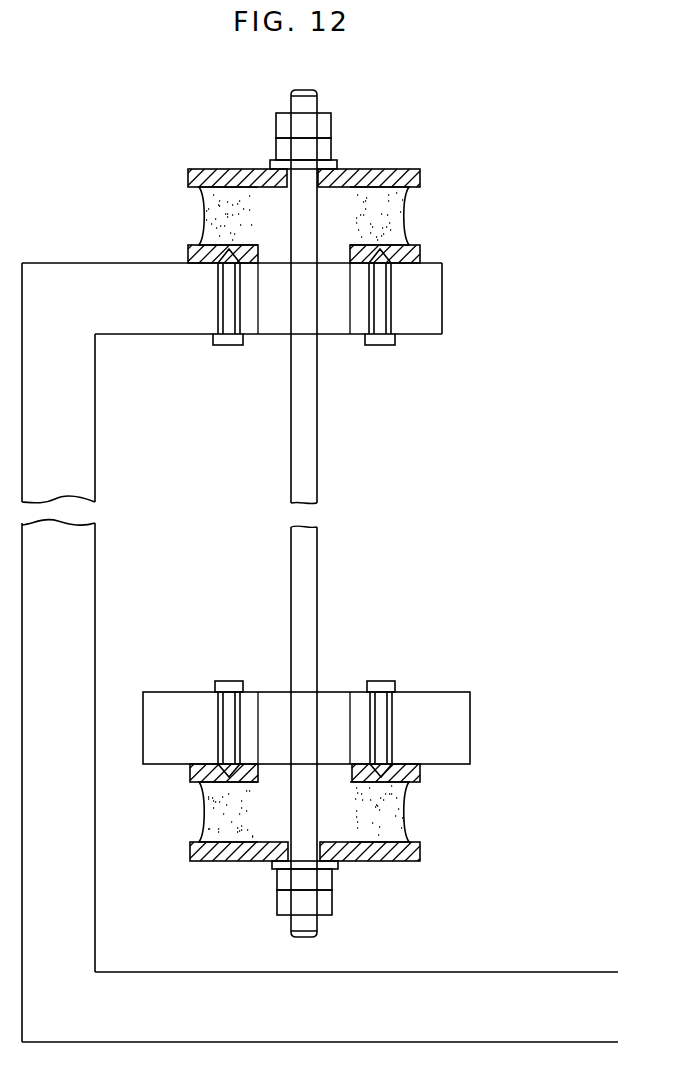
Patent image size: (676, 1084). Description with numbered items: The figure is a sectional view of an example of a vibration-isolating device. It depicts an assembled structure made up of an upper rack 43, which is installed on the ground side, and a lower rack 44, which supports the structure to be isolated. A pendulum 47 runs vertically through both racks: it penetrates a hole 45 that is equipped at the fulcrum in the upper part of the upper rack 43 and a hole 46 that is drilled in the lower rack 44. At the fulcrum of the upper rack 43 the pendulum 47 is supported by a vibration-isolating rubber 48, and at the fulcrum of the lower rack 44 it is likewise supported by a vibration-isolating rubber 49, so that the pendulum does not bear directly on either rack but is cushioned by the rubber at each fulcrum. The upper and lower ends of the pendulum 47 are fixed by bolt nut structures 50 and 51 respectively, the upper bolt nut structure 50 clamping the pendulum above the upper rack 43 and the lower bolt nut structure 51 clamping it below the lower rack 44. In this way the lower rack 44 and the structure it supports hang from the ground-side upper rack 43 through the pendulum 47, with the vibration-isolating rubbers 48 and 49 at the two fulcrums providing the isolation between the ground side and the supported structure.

The upper rack 43 is at (62, 285).
The lower rack 44 is at (437, 705).
The hole 45 is at (334, 307).
The hole 46 is at (333, 705).
The pendulum 47 is at (305, 449).
The vibration-isolating rubber 48 is at (398, 212).
The vibration-isolating rubber 49 is at (393, 818).
The bolt nut structure 50 is at (327, 127).
The bolt nut structure 51 is at (327, 902).